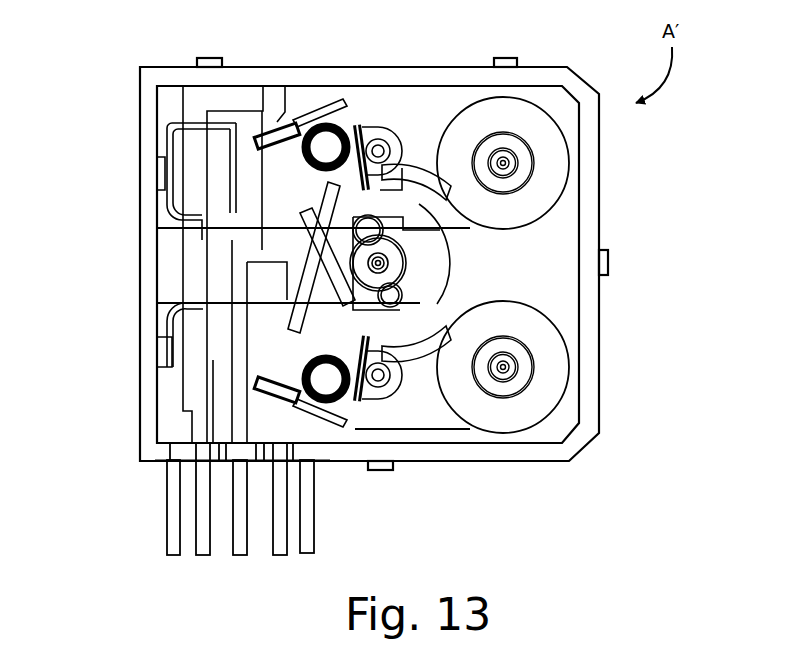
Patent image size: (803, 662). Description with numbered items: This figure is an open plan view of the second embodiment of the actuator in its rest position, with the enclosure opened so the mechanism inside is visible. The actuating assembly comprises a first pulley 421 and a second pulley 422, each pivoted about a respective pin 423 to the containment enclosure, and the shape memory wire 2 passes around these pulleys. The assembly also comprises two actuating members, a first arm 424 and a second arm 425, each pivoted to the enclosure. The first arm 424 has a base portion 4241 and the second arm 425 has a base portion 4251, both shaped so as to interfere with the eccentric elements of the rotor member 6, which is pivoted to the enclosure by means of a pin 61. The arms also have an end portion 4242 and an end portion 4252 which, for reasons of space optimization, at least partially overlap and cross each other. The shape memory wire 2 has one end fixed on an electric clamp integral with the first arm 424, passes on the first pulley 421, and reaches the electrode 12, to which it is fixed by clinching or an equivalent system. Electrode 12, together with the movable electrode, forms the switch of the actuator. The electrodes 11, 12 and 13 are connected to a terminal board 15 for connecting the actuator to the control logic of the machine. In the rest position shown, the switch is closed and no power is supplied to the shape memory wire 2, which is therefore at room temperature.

The electrode 13 is at (220, 100).
The pin 61 is at (378, 263).
The shape memory wire 2 is at (378, 100).
The base portion 4241 is at (408, 203).
The rotor member 6 is at (423, 248).
The first pulley 421 is at (552, 167).
The second pulley 422 is at (555, 373).
The pin 423 is at (507, 166).
The first arm 424 is at (340, 213).
The end portion 4252 is at (157, 228).
The electrode 11 is at (240, 283).
The electrode 12 is at (167, 318).
The end portion 4242 is at (340, 318).
The second arm 425 is at (350, 323).
The base portion 4251 is at (400, 300).
The terminal board 15 is at (215, 578).